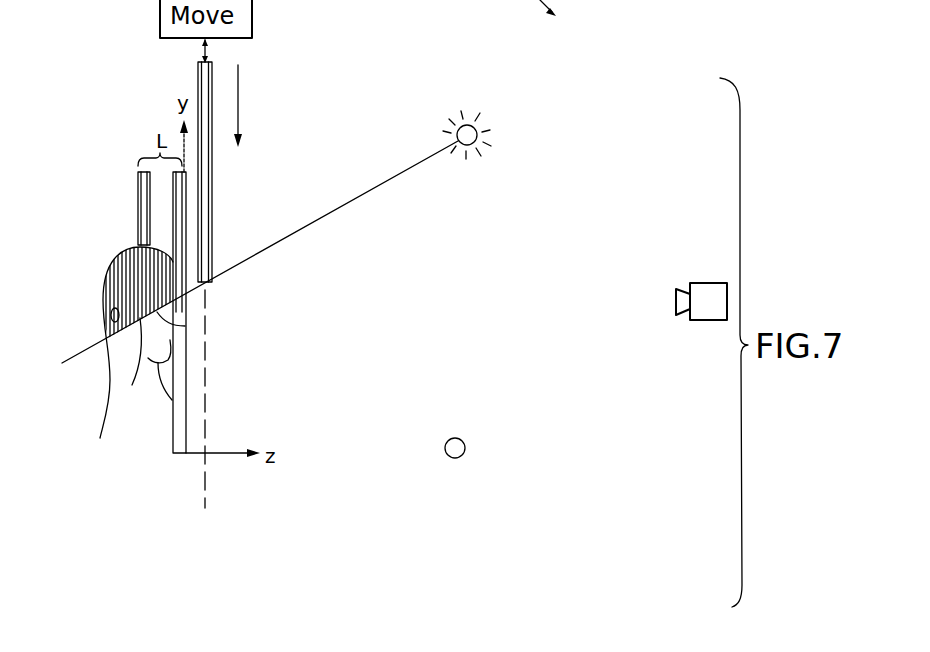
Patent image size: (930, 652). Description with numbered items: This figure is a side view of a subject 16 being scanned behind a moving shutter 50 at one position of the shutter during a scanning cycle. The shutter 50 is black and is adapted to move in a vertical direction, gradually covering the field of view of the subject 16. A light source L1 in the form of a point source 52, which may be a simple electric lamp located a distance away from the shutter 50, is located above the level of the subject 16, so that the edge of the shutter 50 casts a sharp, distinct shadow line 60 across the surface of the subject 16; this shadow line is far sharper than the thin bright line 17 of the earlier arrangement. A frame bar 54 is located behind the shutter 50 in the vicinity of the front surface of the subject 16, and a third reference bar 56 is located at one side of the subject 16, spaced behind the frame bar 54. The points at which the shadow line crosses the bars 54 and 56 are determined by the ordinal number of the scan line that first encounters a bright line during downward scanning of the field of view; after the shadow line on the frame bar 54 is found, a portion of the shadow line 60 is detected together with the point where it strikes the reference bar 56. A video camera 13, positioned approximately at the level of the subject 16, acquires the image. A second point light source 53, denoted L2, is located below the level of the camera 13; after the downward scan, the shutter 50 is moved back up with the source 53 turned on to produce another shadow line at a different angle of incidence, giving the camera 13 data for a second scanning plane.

The camera 13 is at (706, 283).
The subject 16 is at (114, 286).
The thin bright line 17 is at (147, 365).
The moving shutter 50 is at (213, 184).
The point source 52 is at (462, 146).
The second point light source 53 is at (445, 447).
The frame bar 54 is at (180, 243).
The third reference bar 56 is at (139, 184).
The shadow line 60 is at (185, 326).
The light source L1 is at (475, 123).
The second light L2 is at (457, 438).